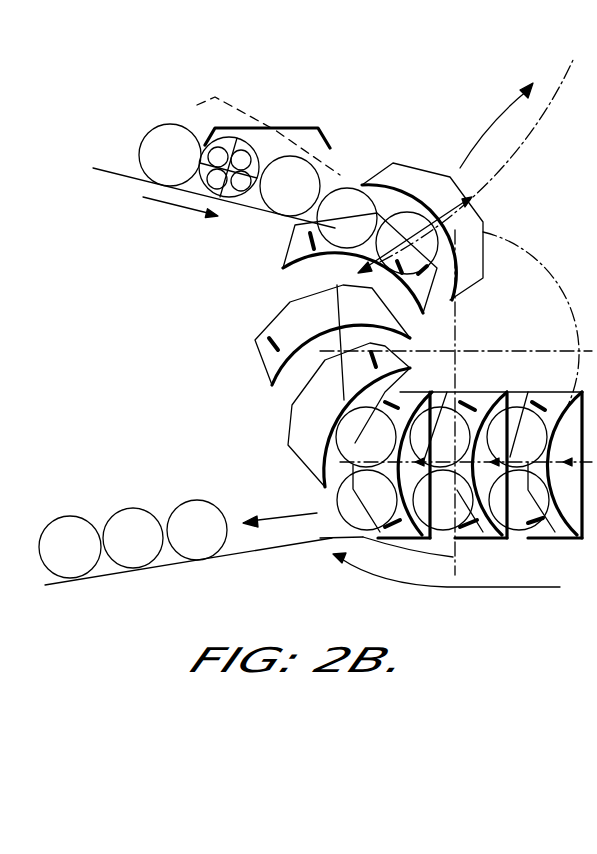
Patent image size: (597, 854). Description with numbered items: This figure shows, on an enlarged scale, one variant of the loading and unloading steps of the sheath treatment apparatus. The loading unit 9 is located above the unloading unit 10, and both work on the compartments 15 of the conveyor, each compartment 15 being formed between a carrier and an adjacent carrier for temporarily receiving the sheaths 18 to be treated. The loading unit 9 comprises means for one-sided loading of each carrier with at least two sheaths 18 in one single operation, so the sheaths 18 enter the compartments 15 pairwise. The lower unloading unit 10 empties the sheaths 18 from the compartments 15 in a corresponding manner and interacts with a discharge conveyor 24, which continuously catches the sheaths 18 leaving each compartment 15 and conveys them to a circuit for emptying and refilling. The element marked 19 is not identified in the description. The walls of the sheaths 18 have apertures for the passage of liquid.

The sheath 18 is at (160, 138).
The guide hood 19 is at (300, 115).
The loading unit 9 is at (352, 172).
The compartment 15 is at (264, 301).
The unloading unit 10 is at (305, 493).
The discharge conveyor 24 is at (118, 590).